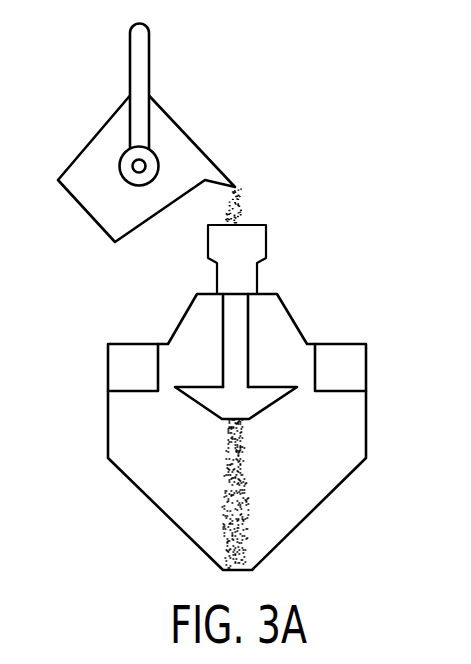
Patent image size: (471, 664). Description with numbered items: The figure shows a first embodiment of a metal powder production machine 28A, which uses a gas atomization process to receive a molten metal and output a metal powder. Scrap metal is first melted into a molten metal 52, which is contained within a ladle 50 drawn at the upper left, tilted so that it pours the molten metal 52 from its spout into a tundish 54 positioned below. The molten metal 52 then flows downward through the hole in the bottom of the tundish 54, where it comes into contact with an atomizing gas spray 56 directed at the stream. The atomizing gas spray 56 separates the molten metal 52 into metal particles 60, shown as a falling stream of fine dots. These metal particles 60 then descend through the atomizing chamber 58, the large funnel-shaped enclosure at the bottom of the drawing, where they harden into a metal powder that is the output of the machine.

The metal powder production machine 28A is at (68, 80).
The ladle 50 is at (190, 140).
The molten metal 52 is at (242, 203).
The tundish 54 is at (240, 265).
The atomizing gas spray 56 is at (273, 385).
The atomizing chamber 58 is at (308, 478).
The metal particles 60 is at (238, 525).